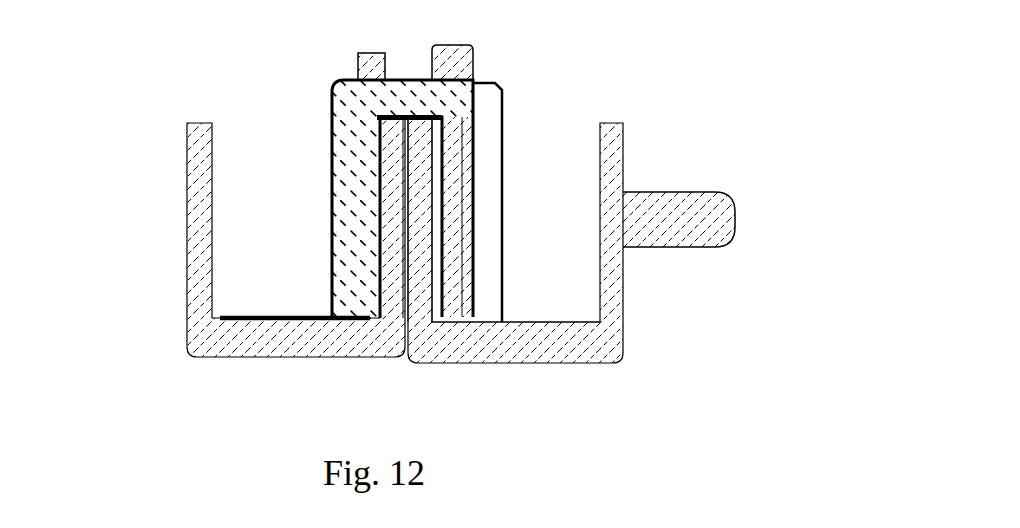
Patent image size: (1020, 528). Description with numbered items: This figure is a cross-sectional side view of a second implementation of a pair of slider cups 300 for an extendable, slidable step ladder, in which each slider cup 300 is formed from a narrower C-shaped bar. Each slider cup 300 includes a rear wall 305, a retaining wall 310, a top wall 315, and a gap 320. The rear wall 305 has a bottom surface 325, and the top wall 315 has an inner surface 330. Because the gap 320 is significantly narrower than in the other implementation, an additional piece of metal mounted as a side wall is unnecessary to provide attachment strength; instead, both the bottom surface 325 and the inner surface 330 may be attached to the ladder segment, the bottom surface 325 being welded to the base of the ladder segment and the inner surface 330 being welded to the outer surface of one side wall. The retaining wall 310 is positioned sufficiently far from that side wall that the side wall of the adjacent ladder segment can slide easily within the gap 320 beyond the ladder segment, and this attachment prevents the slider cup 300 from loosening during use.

The slider cup 300 is at (324, 156).
The rear wall 305 is at (330, 200).
The retaining wall 310 is at (470, 312).
The top wall 315 is at (407, 77).
The gap 320 is at (428, 263).
The bottom surface 325 is at (320, 297).
The inner surface 330 is at (478, 158).